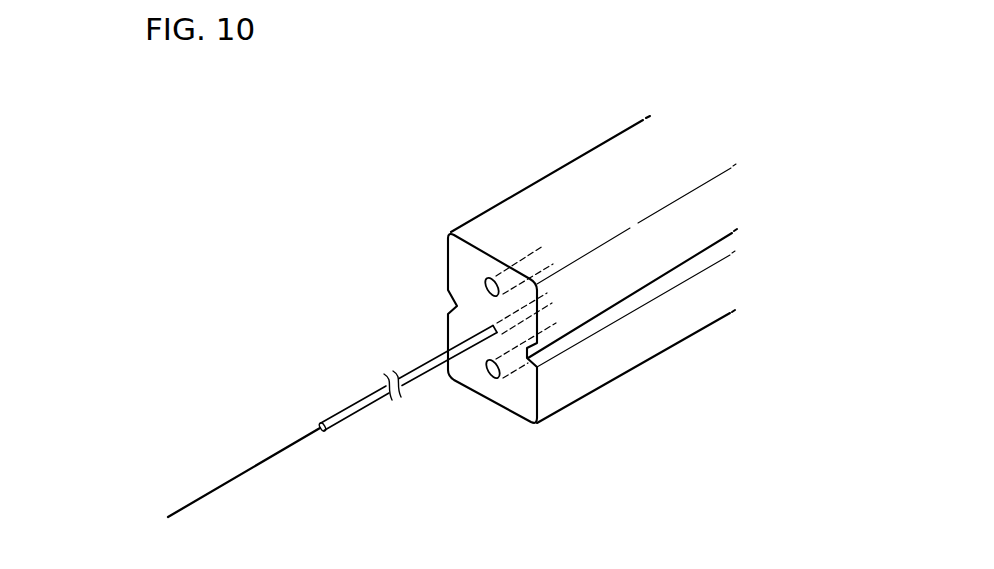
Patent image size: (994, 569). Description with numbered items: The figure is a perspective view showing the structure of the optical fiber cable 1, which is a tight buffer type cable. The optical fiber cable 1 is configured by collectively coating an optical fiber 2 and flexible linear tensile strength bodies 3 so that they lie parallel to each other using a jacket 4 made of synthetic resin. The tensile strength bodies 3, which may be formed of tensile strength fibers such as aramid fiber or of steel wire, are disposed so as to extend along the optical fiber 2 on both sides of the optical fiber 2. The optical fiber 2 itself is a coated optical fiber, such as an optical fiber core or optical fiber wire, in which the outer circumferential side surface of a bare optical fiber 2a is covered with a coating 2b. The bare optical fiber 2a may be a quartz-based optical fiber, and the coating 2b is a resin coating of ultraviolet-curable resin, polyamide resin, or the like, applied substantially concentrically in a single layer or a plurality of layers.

The optical fiber cable 1 is at (553, 170).
The optical fiber 2 is at (360, 425).
The bare optical fiber 2a is at (218, 488).
The coating 2b is at (342, 424).
The tensile strength bodies 3 is at (495, 290).
The jacket 4 is at (521, 402).